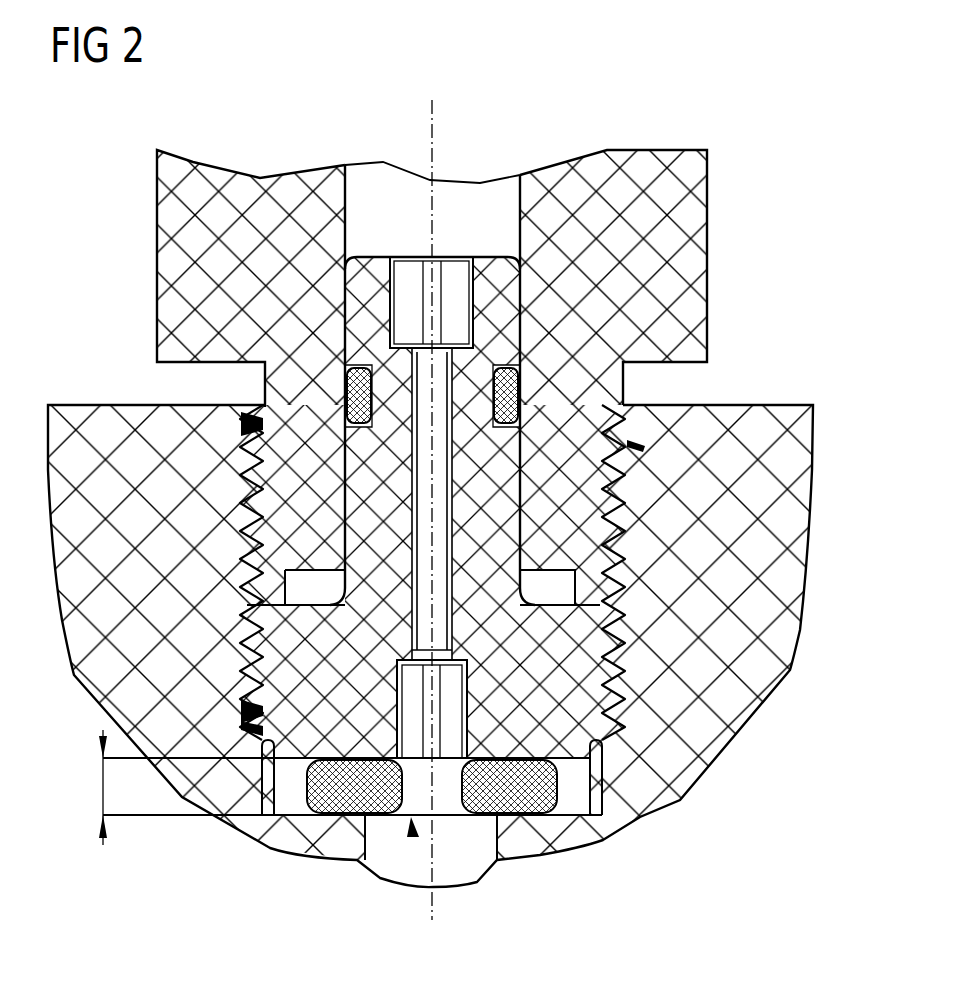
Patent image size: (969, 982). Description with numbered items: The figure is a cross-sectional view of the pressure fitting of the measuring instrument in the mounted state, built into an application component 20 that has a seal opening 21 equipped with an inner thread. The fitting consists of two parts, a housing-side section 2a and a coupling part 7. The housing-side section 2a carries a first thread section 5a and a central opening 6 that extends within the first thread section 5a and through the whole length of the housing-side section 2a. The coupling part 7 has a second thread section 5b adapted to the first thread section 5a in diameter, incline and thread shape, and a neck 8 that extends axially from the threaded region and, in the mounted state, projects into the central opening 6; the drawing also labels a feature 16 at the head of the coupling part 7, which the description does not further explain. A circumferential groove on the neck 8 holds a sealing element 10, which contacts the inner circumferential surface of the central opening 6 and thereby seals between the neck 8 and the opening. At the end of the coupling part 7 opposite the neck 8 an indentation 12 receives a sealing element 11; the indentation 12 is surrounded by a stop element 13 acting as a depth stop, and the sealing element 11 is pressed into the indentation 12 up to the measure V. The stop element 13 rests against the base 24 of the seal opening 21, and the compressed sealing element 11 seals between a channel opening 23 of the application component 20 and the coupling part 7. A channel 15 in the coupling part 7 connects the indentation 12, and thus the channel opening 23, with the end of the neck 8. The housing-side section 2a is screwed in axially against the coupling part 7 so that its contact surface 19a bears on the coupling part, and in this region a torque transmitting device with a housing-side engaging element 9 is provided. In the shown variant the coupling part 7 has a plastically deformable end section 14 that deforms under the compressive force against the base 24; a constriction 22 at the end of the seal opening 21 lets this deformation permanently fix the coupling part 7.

The housing-side section 2a is at (160, 207).
The central opening 6 is at (364, 178).
The neck 8 is at (510, 305).
The screw head cavity 16 is at (455, 268).
The sealing element 10 is at (347, 397).
The first thread section 5a is at (257, 466).
The second thread section 5b is at (243, 693).
The seal opening 21 is at (643, 450).
The contact surface 19a is at (253, 602).
The coupling part 7 is at (313, 645).
The housing-side engaging element 9 is at (550, 580).
The channel 15 is at (447, 617).
The application component 20 is at (732, 692).
The constriction 22 is at (603, 745).
The stop element 13 is at (290, 803).
The plastically deformable end section 14 is at (592, 780).
The sealing element 11 is at (543, 808).
The indentation 12 is at (443, 803).
The channel opening 23 is at (378, 863).
The base 24 is at (418, 840).
The measure V is at (103, 793).